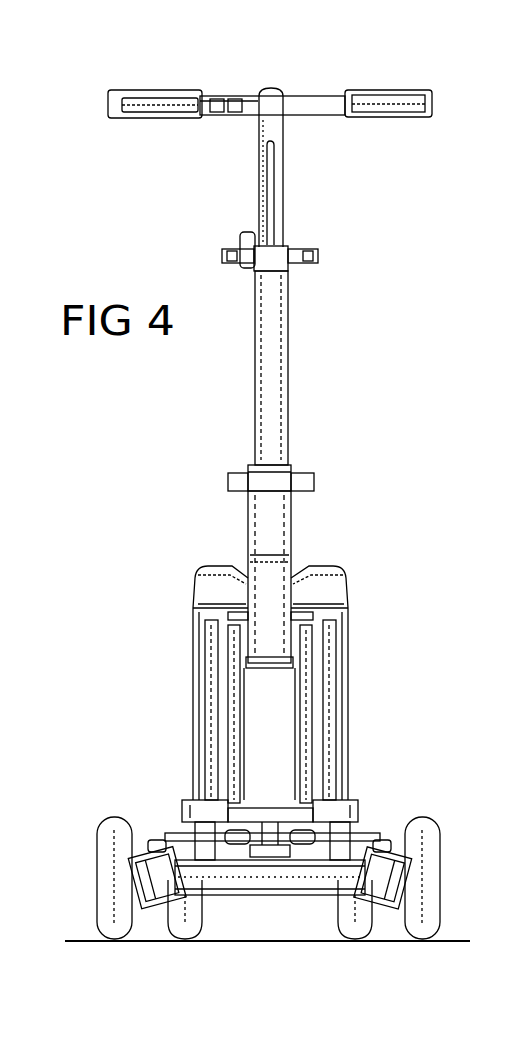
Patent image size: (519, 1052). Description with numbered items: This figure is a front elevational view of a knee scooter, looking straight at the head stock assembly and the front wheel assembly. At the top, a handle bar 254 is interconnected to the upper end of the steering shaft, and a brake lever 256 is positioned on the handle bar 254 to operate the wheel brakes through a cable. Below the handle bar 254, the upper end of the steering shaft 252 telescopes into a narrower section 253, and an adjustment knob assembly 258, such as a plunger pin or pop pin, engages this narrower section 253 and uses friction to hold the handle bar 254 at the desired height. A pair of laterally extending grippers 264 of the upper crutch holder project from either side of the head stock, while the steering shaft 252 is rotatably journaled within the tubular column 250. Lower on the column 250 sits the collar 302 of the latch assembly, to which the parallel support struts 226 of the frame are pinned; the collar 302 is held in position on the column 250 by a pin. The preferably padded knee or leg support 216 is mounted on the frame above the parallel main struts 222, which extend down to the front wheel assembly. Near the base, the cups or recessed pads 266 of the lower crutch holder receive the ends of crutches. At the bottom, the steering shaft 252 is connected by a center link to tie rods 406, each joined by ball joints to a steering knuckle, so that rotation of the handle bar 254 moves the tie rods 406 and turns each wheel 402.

The knee or leg support 216 is at (205, 585).
The main struts 222 is at (207, 732).
The support struts 226 is at (240, 706).
The tubular column 250 is at (277, 381).
The steering shaft 252 is at (272, 385).
The narrower section 253 is at (262, 196).
The handle bar 254 is at (388, 105).
The brake lever 256 is at (167, 103).
The adjustment knob assembly 258 is at (243, 242).
The grippers 264 is at (225, 257).
The cups or recessed pads 266 is at (355, 803).
The collar 302 is at (255, 540).
The wheel 402 is at (108, 838).
The tie rods 406 is at (180, 823).